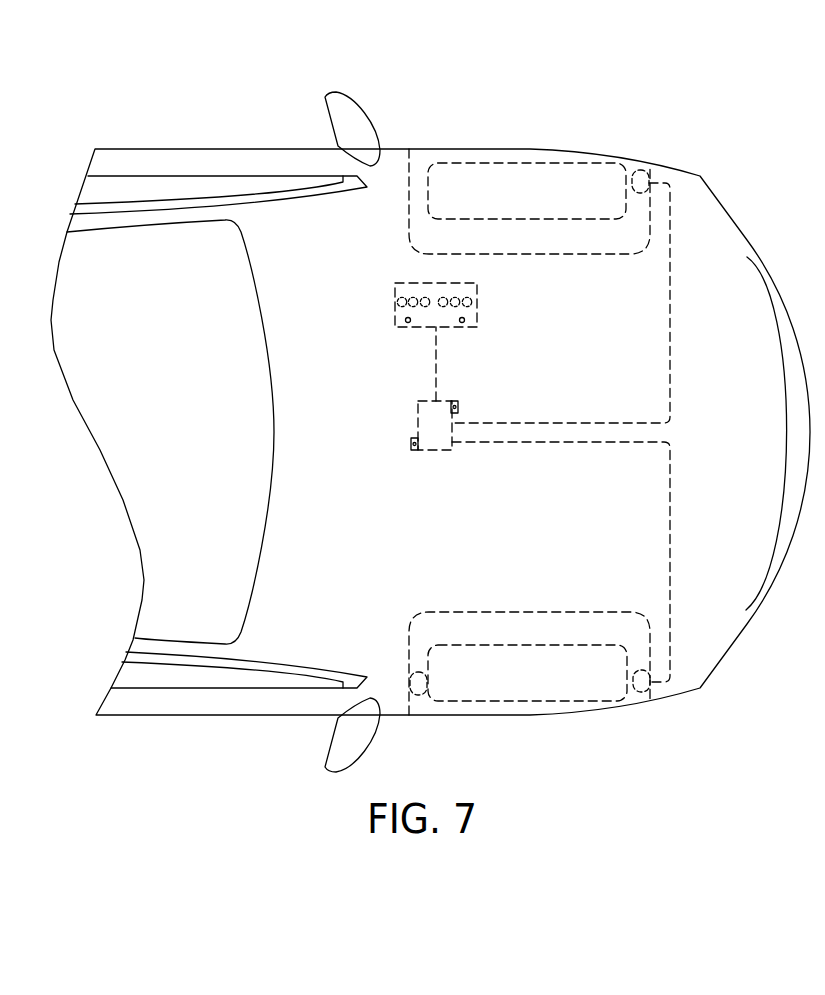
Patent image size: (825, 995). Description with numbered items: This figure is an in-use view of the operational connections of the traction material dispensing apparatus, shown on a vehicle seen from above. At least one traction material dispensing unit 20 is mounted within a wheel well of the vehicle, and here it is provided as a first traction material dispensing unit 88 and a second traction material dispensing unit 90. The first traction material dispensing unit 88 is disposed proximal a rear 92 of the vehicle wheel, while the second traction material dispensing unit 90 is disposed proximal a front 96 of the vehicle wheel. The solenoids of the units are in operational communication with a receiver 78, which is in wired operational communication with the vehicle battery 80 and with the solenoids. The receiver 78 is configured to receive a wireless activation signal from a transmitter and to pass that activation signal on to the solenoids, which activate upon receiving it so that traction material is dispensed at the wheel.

The traction material dispensing unit 20 is at (347, 111).
The receiver 78 is at (452, 450).
The vehicle battery 80 is at (477, 327).
The first traction material dispensing unit 88 is at (404, 668).
The second traction material dispensing unit 90 is at (641, 691).
The rear of vehicle wheel 92 is at (417, 712).
The front of vehicle wheel 96 is at (665, 647).